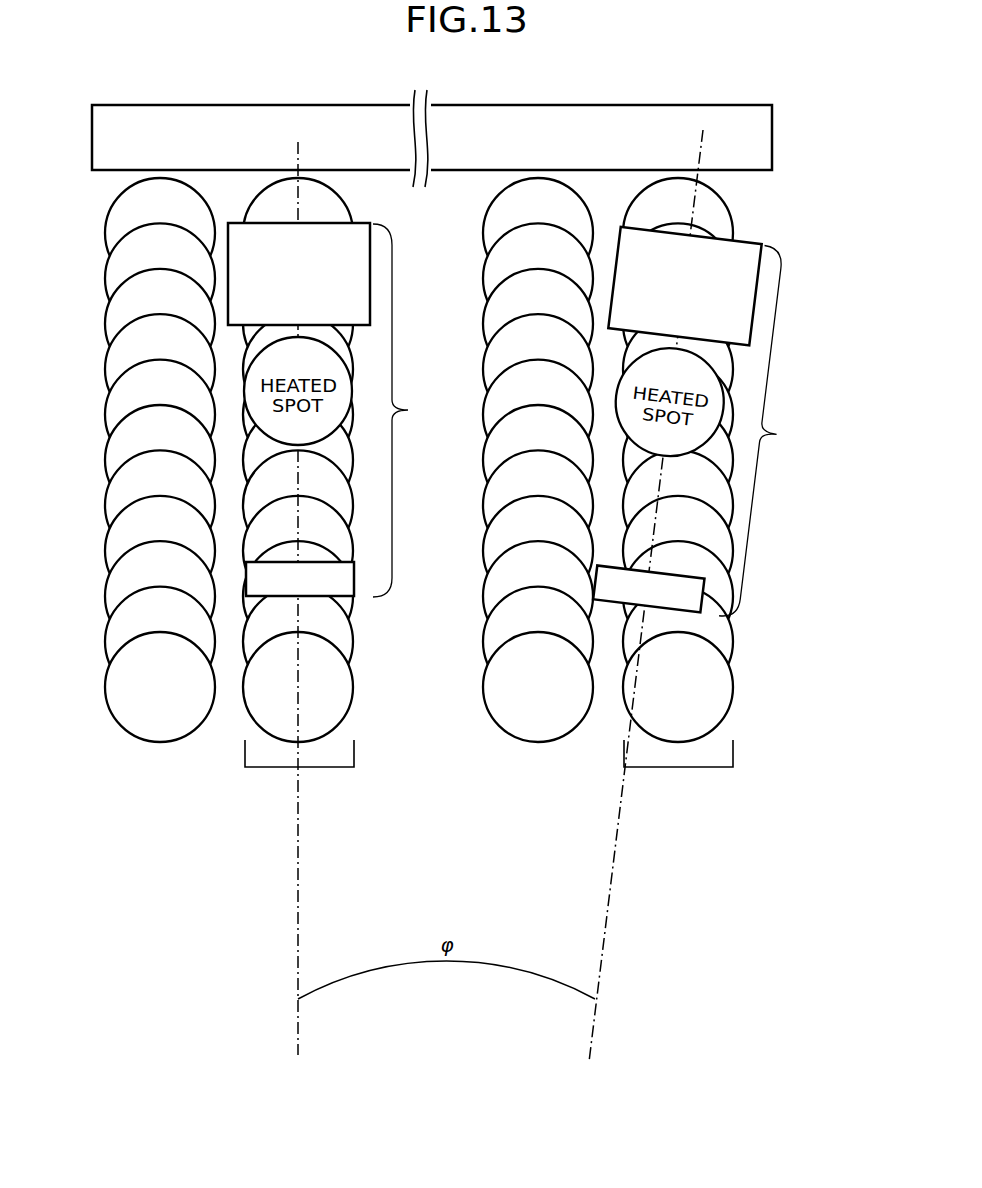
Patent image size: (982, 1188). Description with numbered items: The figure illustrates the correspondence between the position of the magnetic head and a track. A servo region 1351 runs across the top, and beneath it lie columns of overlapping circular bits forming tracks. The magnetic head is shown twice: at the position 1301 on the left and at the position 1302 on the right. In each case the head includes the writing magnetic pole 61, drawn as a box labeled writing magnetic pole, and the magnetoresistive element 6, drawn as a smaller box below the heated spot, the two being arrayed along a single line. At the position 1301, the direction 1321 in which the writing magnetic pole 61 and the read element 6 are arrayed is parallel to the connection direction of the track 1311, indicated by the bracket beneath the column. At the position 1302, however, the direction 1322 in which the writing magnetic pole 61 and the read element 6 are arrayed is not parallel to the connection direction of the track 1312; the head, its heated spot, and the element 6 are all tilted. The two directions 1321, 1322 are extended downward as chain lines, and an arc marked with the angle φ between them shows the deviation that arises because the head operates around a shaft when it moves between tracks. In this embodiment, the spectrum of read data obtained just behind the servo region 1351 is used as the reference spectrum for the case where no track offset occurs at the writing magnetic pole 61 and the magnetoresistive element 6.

The servo region 1351 is at (772, 137).
The writing magnetic pole 61 is at (352, 238).
The magnetoresistive element 6 is at (354, 579).
The position 1301 is at (412, 410).
The position 1302 is at (770, 433).
The track 1311 is at (335, 767).
The track 1312 is at (683, 767).
The direction 1321 is at (298, 923).
The direction 1322 is at (607, 923).